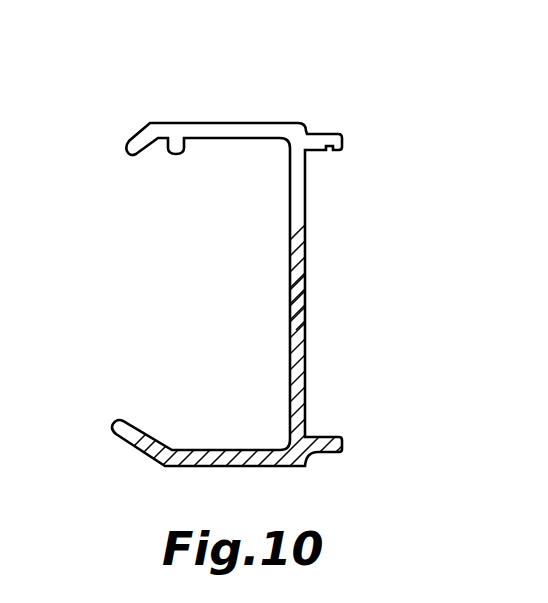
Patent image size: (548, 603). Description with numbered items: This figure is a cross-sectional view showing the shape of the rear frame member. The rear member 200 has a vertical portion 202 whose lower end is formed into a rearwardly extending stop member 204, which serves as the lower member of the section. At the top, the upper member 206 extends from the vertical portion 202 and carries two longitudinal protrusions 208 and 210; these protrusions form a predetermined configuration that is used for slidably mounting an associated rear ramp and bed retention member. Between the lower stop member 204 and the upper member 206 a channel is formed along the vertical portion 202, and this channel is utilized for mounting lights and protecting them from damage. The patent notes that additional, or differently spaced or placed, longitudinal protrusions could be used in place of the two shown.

The rear member 200 is at (287, 92).
The vertical portion 202 is at (305, 242).
The stop member 204 is at (205, 450).
The upper member 206 is at (202, 123).
The longitudinal protrusion 208 is at (127, 149).
The longitudinal protrusion 210 is at (178, 156).